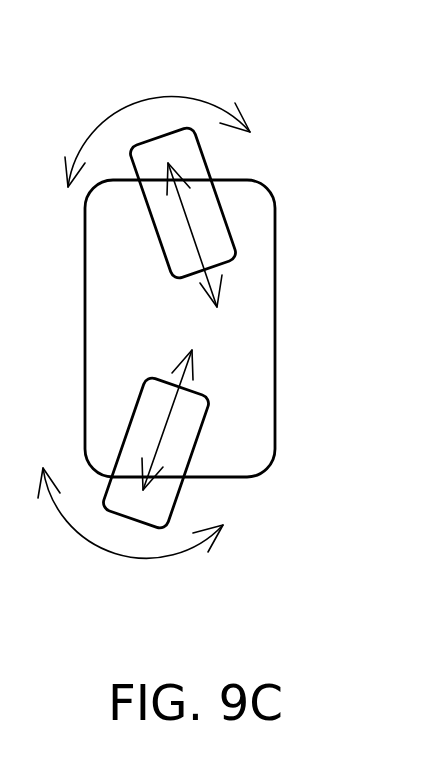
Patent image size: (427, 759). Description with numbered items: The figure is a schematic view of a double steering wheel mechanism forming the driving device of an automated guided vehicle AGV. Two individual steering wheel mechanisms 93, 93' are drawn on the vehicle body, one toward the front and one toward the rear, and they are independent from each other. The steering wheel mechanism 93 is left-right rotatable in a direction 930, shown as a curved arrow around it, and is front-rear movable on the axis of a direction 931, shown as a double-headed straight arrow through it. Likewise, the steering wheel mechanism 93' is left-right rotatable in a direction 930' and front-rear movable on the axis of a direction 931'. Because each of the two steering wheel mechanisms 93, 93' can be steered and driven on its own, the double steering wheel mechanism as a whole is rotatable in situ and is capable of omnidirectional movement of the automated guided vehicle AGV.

The automated guided vehicle AGV is at (252, 363).
The steering wheel mechanism 93 is at (222, 203).
The direction 931 is at (255, 235).
The direction 930 is at (157, 99).
The steering wheel mechanism 93' is at (199, 453).
The direction 931' is at (234, 420).
The direction 930' is at (130, 558).